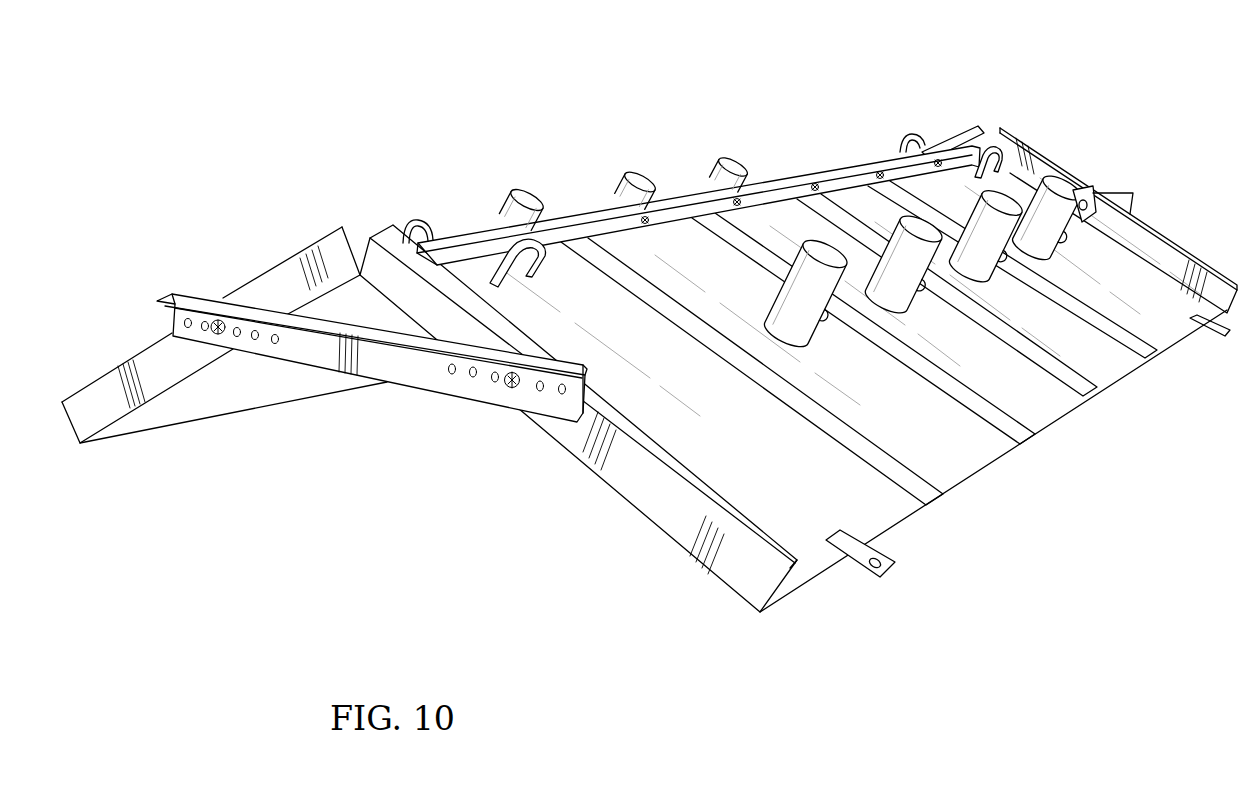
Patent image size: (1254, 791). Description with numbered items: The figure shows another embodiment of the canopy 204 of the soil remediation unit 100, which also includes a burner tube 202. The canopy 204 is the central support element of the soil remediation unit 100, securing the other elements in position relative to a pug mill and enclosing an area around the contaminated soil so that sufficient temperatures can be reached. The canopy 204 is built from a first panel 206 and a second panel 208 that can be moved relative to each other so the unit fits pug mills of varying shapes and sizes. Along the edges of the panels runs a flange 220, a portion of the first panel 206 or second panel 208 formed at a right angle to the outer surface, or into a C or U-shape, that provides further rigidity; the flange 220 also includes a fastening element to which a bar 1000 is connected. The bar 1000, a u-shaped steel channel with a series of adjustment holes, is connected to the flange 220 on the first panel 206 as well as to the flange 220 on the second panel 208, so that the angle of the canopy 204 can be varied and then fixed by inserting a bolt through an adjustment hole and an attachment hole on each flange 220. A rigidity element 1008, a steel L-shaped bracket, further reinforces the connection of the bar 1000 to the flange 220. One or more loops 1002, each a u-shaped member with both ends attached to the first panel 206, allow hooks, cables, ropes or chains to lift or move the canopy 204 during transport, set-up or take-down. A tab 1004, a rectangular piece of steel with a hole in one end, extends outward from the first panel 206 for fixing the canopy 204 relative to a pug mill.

The soil remediation unit 100 is at (1101, 74).
The burner tube 202 is at (1052, 237).
The canopy 204 is at (772, 218).
The first panel 206 is at (985, 462).
The second panel 208 is at (220, 405).
The flange 220 is at (290, 270).
The bar 1000 is at (420, 400).
The loop 1002 is at (413, 225).
The tab 1004 is at (893, 568).
The rigidity element 1008 is at (1085, 193).